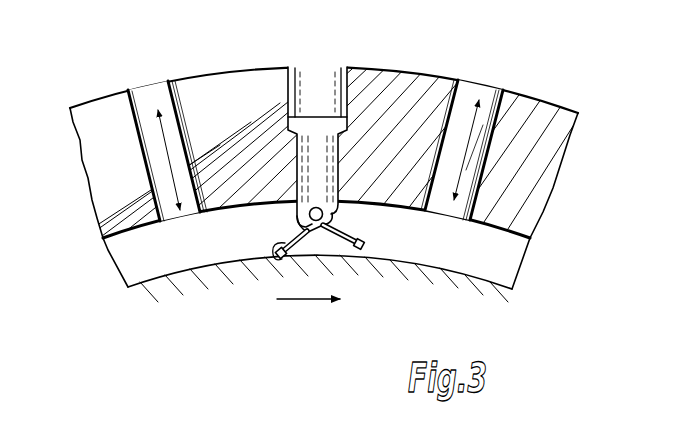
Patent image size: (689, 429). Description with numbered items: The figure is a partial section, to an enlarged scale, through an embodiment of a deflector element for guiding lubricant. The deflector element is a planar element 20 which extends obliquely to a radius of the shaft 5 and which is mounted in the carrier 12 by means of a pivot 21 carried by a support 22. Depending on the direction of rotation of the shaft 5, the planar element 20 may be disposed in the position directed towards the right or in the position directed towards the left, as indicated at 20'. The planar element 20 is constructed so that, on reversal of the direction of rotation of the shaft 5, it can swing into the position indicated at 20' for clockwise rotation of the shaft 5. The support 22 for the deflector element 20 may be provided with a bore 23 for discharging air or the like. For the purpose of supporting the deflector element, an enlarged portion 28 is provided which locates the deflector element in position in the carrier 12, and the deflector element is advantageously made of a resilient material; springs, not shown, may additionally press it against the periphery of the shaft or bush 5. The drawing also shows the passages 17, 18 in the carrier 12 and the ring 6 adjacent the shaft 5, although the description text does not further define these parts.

The carrier 12 is at (557, 150).
The ring band 6 is at (513, 256).
The shaft 5 is at (443, 276).
The channel 17 is at (495, 128).
The channel 18 is at (137, 118).
The bore 23 is at (322, 155).
The enlarged portion 28 is at (312, 114).
The support 22 is at (292, 178).
The pivot 21 is at (331, 210).
The planar element 20 is at (333, 270).
The position of planar element 20' is at (264, 287).